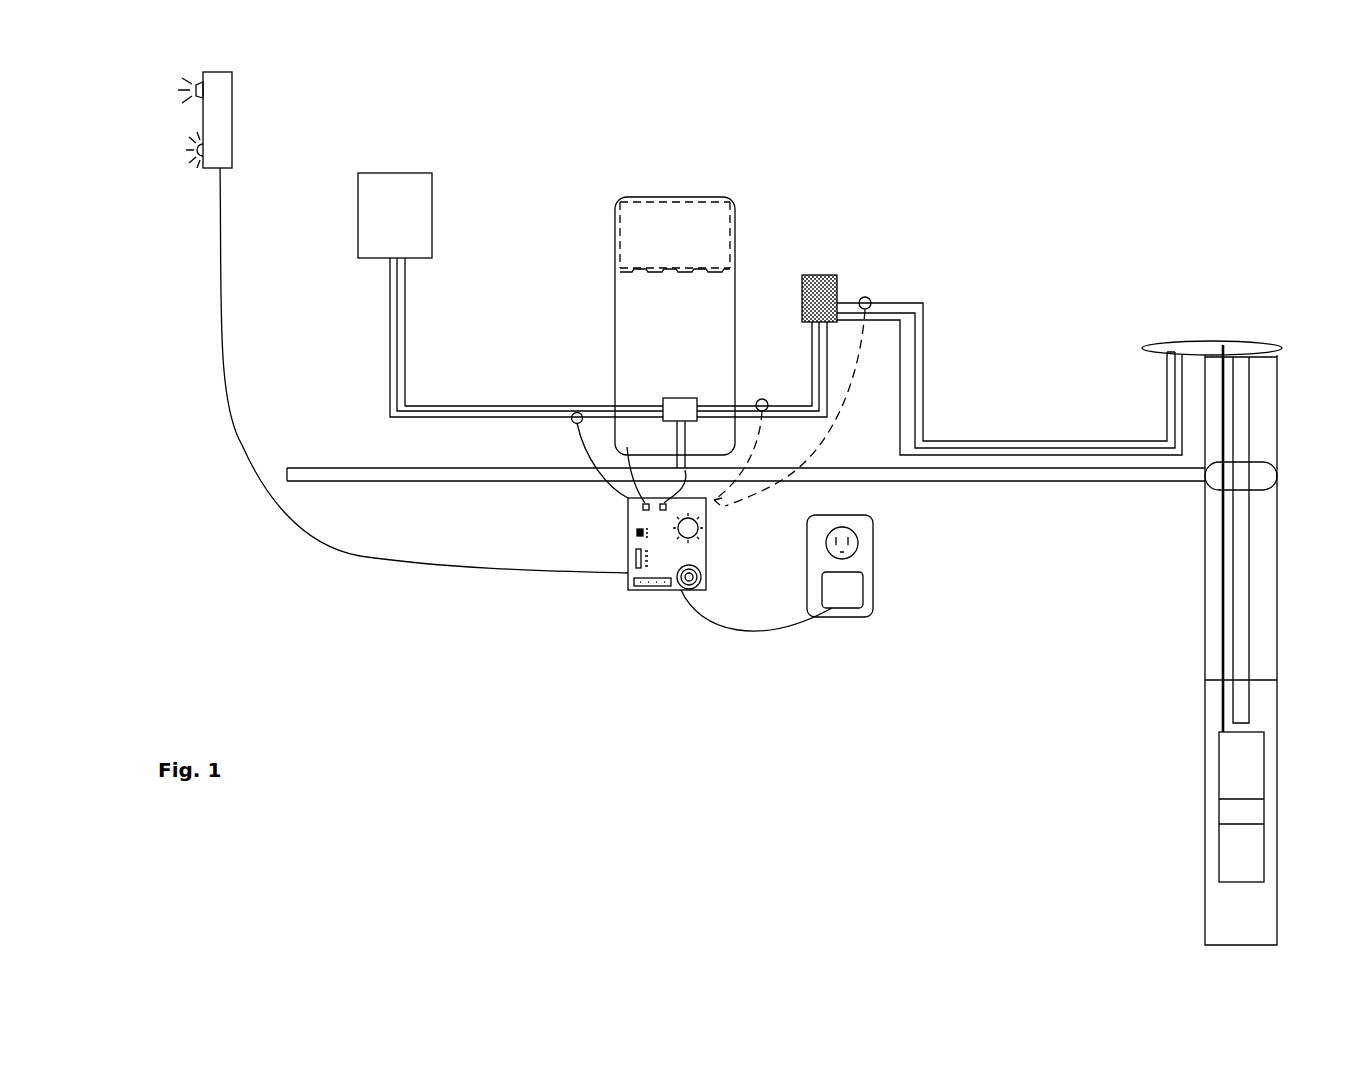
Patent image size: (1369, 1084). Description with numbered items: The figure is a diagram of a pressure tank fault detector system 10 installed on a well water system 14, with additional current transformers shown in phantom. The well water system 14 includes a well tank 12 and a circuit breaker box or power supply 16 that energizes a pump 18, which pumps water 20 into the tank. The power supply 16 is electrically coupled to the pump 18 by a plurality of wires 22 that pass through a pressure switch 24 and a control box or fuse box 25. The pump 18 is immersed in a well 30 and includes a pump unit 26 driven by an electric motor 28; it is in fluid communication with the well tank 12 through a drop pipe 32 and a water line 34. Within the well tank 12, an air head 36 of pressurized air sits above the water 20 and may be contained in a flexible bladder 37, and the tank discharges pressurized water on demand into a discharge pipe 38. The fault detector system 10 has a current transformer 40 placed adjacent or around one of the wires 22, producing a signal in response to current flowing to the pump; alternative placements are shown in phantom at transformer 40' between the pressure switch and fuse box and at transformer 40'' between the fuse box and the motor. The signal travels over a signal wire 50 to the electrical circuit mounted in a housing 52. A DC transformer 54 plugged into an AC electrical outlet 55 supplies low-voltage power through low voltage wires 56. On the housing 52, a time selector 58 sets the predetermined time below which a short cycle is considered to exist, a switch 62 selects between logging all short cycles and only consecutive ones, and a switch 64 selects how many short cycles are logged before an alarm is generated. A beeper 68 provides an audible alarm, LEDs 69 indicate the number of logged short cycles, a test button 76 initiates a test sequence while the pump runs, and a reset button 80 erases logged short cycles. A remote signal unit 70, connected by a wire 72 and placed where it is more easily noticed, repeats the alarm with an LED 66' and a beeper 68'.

The pressure tank fault detector system 10 is at (558, 612).
The well tank 12 is at (735, 215).
The well water system 14 is at (1033, 168).
The power supply 16 is at (418, 172).
The pump 18 is at (1138, 777).
The water 20 is at (672, 334).
The wires 22 is at (397, 346).
The pressure switch 24 is at (663, 405).
The fuse box 25 is at (815, 275).
The pump unit 26 is at (1240, 862).
The electric motor 28 is at (1238, 772).
The well 30 is at (1205, 645).
The drop pipe 32 is at (1233, 612).
The water line 34 is at (1022, 483).
The head 36 is at (672, 252).
The bladder 37 is at (700, 195).
The discharge pipe 38 is at (413, 483).
The current transformer 40 is at (537, 433).
The current transformer 40' is at (759, 432).
The current transformer 40'' is at (824, 378).
The signal wire 50 is at (592, 456).
The housing 52 is at (706, 542).
The DC transformer 54 is at (863, 600).
The AC electrical outlet 55 is at (873, 558).
The low voltage wires 56 is at (762, 640).
The time selector 58 is at (698, 524).
The switch 62 is at (636, 532).
The switch 64 is at (636, 560).
The LED 66' is at (141, 174).
The beeper 68 is at (721, 574).
The beeper 68' is at (134, 112).
The LEDs 69 is at (663, 588).
The remote signal unit 70 is at (232, 118).
The wire 72 is at (275, 537).
The test button 76 is at (637, 464).
The reset button 80 is at (694, 462).